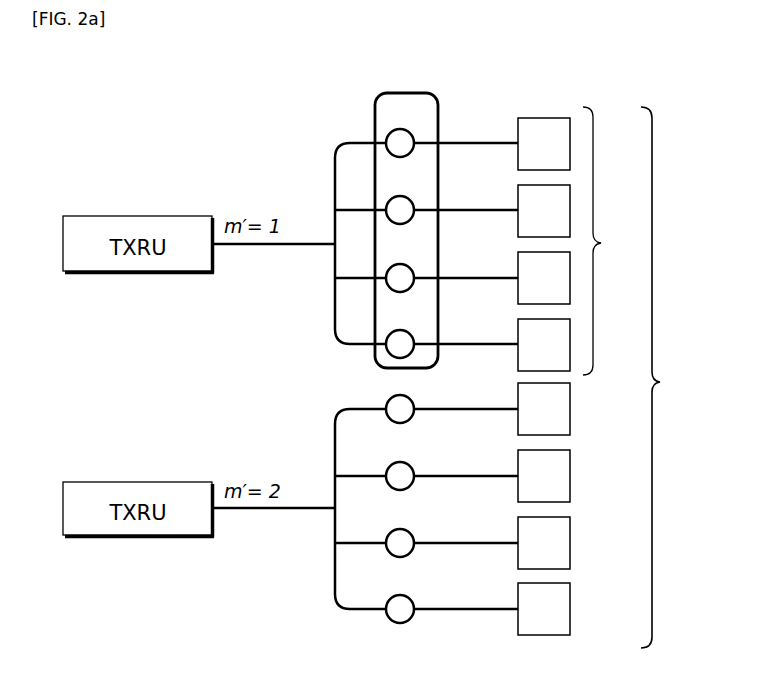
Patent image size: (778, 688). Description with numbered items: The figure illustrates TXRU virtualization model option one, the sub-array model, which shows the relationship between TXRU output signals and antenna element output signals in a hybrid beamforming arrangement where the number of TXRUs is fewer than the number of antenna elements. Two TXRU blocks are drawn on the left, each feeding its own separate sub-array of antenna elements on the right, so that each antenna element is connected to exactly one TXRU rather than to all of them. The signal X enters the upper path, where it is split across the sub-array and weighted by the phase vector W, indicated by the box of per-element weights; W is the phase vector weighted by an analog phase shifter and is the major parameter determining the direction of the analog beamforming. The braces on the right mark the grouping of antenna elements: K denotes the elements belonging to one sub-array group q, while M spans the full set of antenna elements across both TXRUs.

The phase vector W is at (384, 224).
The input signal X is at (251, 366).
The number of antenna elements per TXRU K is at (603, 241).
The antenna element group q is at (622, 368).
The total number of antenna elements M is at (662, 377).